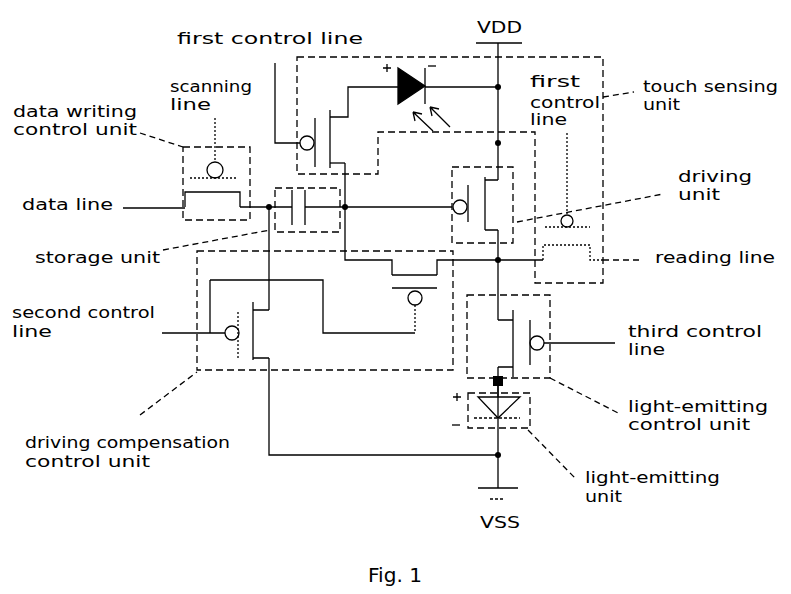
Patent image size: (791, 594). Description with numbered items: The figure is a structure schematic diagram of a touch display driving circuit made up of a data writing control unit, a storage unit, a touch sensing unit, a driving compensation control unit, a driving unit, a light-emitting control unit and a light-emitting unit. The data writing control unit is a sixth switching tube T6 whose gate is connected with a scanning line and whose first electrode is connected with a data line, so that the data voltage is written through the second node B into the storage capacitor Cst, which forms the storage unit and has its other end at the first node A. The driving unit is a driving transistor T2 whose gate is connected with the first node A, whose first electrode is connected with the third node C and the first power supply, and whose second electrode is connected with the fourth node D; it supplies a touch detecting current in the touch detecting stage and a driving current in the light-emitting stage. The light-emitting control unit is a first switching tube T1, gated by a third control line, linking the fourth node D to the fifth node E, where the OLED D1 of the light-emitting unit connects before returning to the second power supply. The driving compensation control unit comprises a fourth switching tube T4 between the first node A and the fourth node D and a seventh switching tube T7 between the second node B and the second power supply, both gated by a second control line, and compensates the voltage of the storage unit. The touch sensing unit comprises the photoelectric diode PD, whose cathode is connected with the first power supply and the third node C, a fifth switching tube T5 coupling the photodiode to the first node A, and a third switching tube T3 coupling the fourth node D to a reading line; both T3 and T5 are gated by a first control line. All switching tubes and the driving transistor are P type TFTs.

The first switching tube T1 is at (515, 343).
The driving transistor T2 is at (480, 203).
The third switching tube T3 is at (573, 244).
The fourth switching tube T4 is at (396, 303).
The fifth switching tube T5 is at (349, 127).
The sixth switching tube T6 is at (212, 189).
The seventh switching tube T7 is at (251, 331).
The storage capacitor Cst is at (302, 221).
The photoelectric diode PD is at (440, 84).
The OLED D1 is at (503, 405).
The first node A is at (351, 199).
The second node B is at (271, 197).
The third node C is at (488, 147).
The fourth node D is at (489, 269).
The fifth node E is at (493, 383).